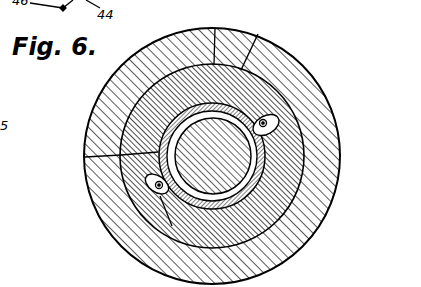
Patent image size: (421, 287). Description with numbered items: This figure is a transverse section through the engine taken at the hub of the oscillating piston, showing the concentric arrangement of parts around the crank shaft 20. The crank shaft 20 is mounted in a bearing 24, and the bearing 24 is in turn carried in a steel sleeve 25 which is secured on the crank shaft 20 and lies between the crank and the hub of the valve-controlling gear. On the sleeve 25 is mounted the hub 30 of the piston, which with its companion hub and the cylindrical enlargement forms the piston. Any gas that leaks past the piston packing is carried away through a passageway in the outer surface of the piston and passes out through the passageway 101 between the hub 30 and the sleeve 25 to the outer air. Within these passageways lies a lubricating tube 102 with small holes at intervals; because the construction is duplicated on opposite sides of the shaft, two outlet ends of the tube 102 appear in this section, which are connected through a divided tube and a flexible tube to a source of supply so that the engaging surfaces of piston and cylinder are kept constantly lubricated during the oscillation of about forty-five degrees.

The crank shaft 20 is at (124, 124).
The bearing 24 is at (88, 166).
The steel sleeve 25 is at (118, 243).
The hub of the piston 30 is at (281, 9).
The passageway 101 is at (283, 122).
The lubricating tube 102 is at (300, 93).